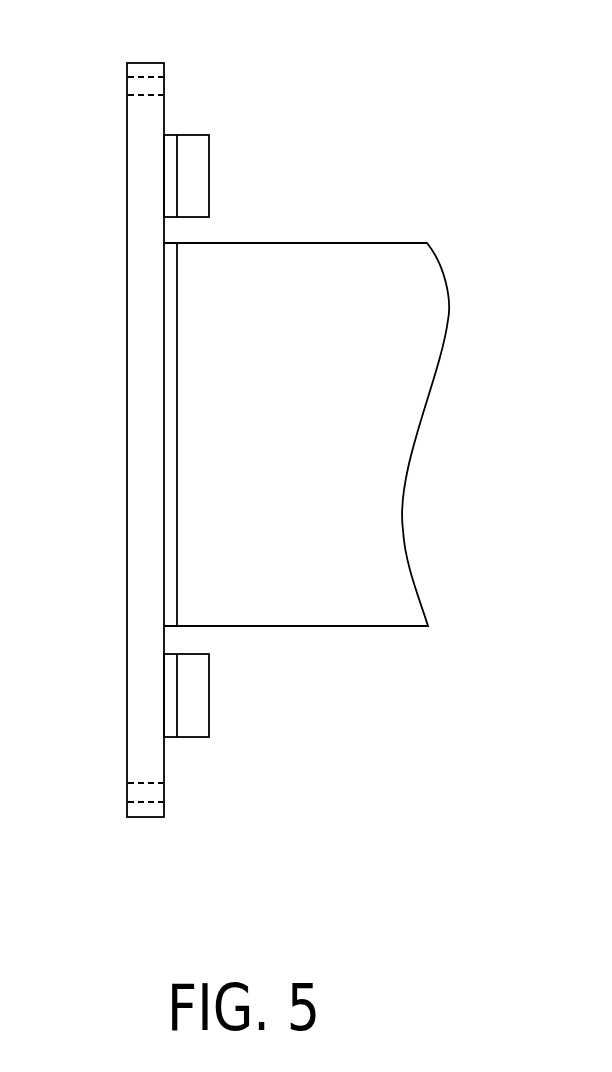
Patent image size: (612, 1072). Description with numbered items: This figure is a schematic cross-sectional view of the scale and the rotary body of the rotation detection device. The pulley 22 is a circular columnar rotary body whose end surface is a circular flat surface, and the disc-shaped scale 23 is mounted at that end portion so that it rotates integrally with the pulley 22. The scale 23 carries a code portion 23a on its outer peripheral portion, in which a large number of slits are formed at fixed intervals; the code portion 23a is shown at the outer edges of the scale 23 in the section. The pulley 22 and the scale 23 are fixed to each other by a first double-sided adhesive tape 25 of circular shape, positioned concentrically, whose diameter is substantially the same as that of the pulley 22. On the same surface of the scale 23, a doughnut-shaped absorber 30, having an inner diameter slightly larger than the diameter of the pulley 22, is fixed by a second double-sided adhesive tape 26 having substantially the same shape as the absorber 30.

The pulley 22 is at (373, 626).
The scale 23 is at (143, 817).
The code portion 23a is at (138, 88).
The first double-sided adhesive tape 25 is at (172, 465).
The second double-sided adhesive tape 26 is at (170, 130).
The absorber 30 is at (195, 172).